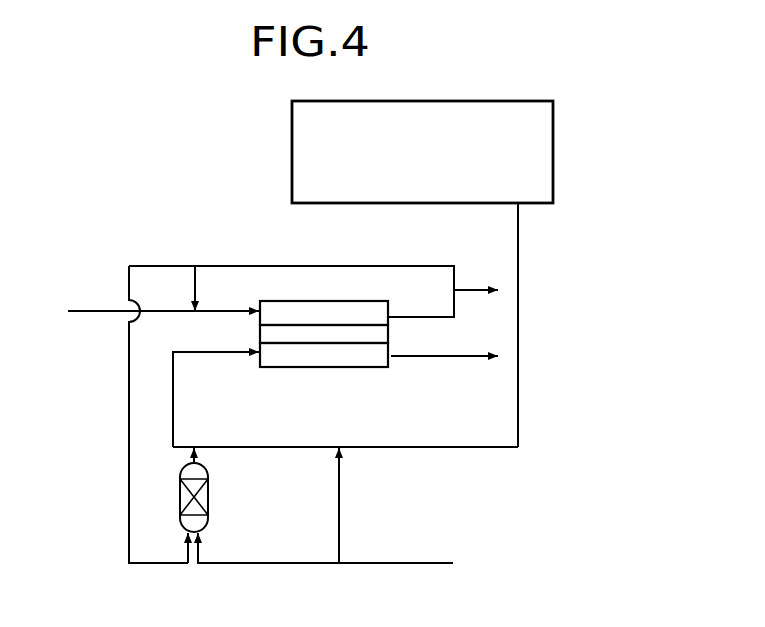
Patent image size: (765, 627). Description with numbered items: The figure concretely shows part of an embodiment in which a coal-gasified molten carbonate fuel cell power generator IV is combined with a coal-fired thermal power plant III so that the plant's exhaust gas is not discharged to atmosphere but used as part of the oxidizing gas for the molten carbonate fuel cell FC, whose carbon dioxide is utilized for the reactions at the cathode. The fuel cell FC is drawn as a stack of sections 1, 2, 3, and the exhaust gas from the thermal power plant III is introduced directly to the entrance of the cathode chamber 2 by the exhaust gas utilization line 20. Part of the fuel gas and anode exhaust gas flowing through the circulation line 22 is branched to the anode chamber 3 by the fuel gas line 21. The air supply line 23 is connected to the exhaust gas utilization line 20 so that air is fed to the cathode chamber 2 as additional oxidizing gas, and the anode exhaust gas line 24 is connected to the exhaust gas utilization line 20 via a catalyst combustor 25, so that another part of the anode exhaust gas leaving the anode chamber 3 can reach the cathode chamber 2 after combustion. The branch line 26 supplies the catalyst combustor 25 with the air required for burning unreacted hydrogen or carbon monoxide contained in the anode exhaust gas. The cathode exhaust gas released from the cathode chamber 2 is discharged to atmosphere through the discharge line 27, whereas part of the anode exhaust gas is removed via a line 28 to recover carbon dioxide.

The fuel cell unit / anode section 1 is at (343, 335).
The cathode chamber 2 is at (288, 361).
The anode chamber 3 is at (297, 304).
The exhaust gas utilization line 20 is at (520, 405).
The fuel gas line 21 is at (97, 312).
The circulation line 22 is at (195, 285).
The air supply line 23 is at (342, 508).
The anode exhaust gas line 24 is at (129, 478).
The catalyst combustor 25 is at (209, 490).
The branch line 26 is at (250, 563).
The discharge line 27 is at (437, 358).
The line 28 is at (477, 290).
The molten carbonate fuel cell FC is at (375, 299).
The coal-gasified molten carbonate fuel cell power generator IV is at (226, 265).
The coal-fired thermal power plant III is at (603, 78).